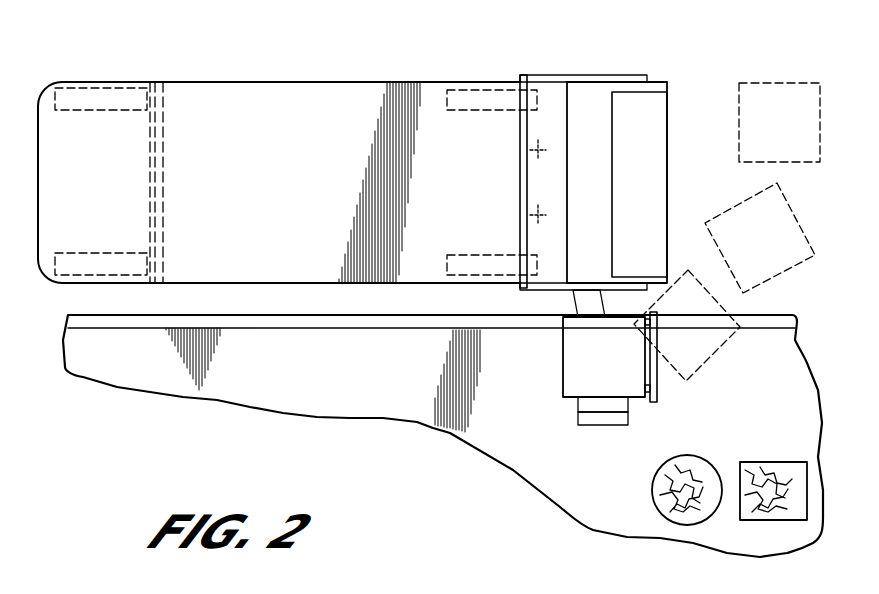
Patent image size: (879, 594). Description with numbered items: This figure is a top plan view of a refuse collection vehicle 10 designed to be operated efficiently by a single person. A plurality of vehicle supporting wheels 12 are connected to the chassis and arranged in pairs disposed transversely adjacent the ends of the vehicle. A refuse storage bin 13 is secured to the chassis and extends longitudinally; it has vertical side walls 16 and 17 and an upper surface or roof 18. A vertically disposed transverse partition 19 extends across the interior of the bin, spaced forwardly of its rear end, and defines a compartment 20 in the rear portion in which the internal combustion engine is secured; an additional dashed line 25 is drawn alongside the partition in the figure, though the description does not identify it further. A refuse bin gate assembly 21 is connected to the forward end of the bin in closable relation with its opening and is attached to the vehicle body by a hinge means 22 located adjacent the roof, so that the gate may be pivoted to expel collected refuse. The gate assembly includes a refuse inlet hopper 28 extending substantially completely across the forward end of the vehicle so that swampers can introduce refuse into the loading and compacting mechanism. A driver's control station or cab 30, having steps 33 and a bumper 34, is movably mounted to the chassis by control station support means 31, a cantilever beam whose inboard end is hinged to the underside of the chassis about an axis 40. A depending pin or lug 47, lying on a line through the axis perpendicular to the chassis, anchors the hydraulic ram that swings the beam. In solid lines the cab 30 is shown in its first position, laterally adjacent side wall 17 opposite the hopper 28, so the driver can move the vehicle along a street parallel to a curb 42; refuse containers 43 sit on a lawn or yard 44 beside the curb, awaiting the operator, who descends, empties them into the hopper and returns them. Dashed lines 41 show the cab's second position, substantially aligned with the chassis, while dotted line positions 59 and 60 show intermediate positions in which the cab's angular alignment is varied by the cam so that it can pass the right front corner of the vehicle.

The refuse collection vehicle 10 is at (344, 72).
The vehicle supporting wheels 12 is at (67, 83).
The refuse storage bin 13 is at (194, 82).
The vertical side wall 16 is at (260, 82).
The vertical side wall 17 is at (243, 285).
The upper surface or roof 18 is at (326, 176).
The transverse partition 19 is at (152, 168).
The compartment 20 is at (105, 130).
The refuse bin gate assembly 21 is at (575, 108).
The hinge means 22 is at (520, 182).
The hinge 25 is at (155, 138).
The refuse inlet hopper 28 is at (647, 128).
The driver's control station or cab 30 is at (603, 355).
The control station support means 31 is at (593, 297).
The steps 33 is at (607, 417).
The bumper 34 is at (655, 378).
The axis 40 is at (537, 142).
The dashed lines (second cab position) 41 is at (762, 83).
The curb 42 is at (322, 322).
The refuse containers 43 is at (742, 472).
The lawn or yard 44 is at (562, 467).
The depending pin or lug 47 is at (537, 217).
The dotted line position 59 is at (695, 272).
The dotted line position 60 is at (737, 210).